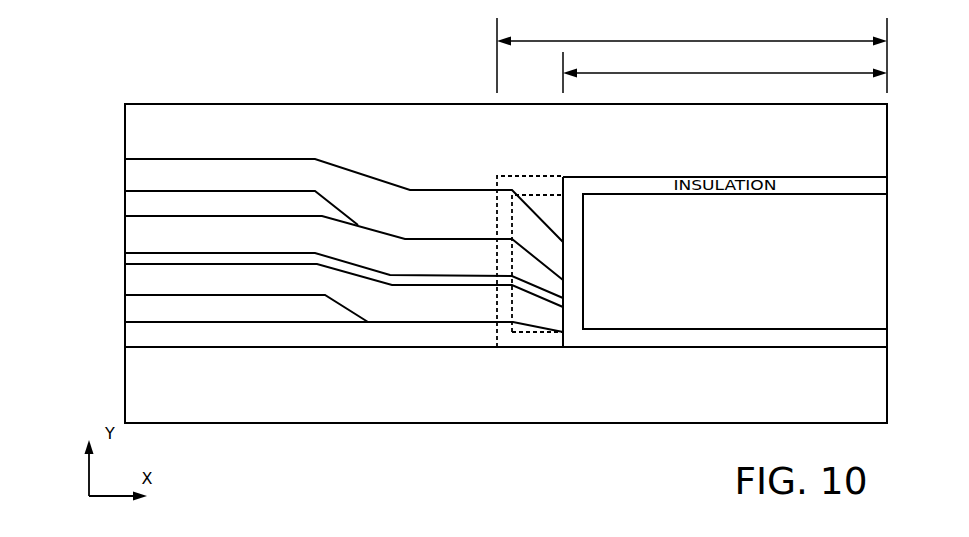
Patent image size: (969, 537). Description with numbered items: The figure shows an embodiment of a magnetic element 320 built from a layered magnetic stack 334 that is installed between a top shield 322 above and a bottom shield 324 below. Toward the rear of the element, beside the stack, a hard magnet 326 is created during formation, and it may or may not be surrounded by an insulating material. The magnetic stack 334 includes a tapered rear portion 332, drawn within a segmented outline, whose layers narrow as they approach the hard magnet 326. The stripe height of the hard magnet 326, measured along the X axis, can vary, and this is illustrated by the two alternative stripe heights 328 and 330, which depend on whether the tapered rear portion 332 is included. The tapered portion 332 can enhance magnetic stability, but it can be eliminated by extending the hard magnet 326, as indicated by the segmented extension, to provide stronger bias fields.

The magnetic element 320 is at (192, 68).
The top shield 322 is at (506, 140).
The bottom shield 324 is at (506, 381).
The hard magnet 326 is at (735, 261).
The alternative stripe height 328 is at (725, 74).
The alternative stripe height 330 is at (692, 55).
The tapered rear portion 332 is at (528, 302).
The magnetic stack 334 is at (124, 167).